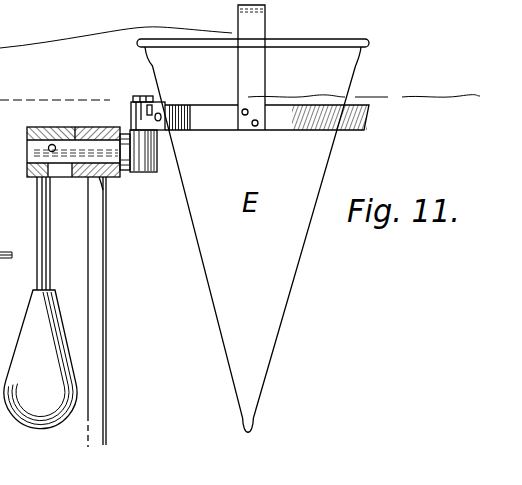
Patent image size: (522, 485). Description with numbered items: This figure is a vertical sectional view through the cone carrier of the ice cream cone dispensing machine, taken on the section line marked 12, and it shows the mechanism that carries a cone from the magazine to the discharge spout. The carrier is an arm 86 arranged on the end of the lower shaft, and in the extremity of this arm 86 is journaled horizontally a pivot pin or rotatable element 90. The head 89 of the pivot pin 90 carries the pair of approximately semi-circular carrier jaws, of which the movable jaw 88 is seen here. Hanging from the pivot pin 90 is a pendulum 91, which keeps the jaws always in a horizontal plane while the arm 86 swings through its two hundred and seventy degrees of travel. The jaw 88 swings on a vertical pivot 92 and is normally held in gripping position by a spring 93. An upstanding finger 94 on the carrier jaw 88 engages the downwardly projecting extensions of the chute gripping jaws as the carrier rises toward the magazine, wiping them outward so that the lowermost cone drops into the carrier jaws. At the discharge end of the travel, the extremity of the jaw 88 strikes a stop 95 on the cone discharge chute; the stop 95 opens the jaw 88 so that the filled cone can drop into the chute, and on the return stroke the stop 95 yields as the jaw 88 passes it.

The section line 12- 12 is at (110, 93).
The arm 86 is at (97, 263).
The jaw 88 is at (221, 123).
The head 89 is at (140, 162).
The pivot pin 90 is at (95, 147).
The pendulum 91 is at (40, 316).
The vertical pivot 92 is at (147, 95).
The spring 93 is at (137, 101).
The upstanding finger 94 is at (253, 31).
The stop 95 is at (25, 233).